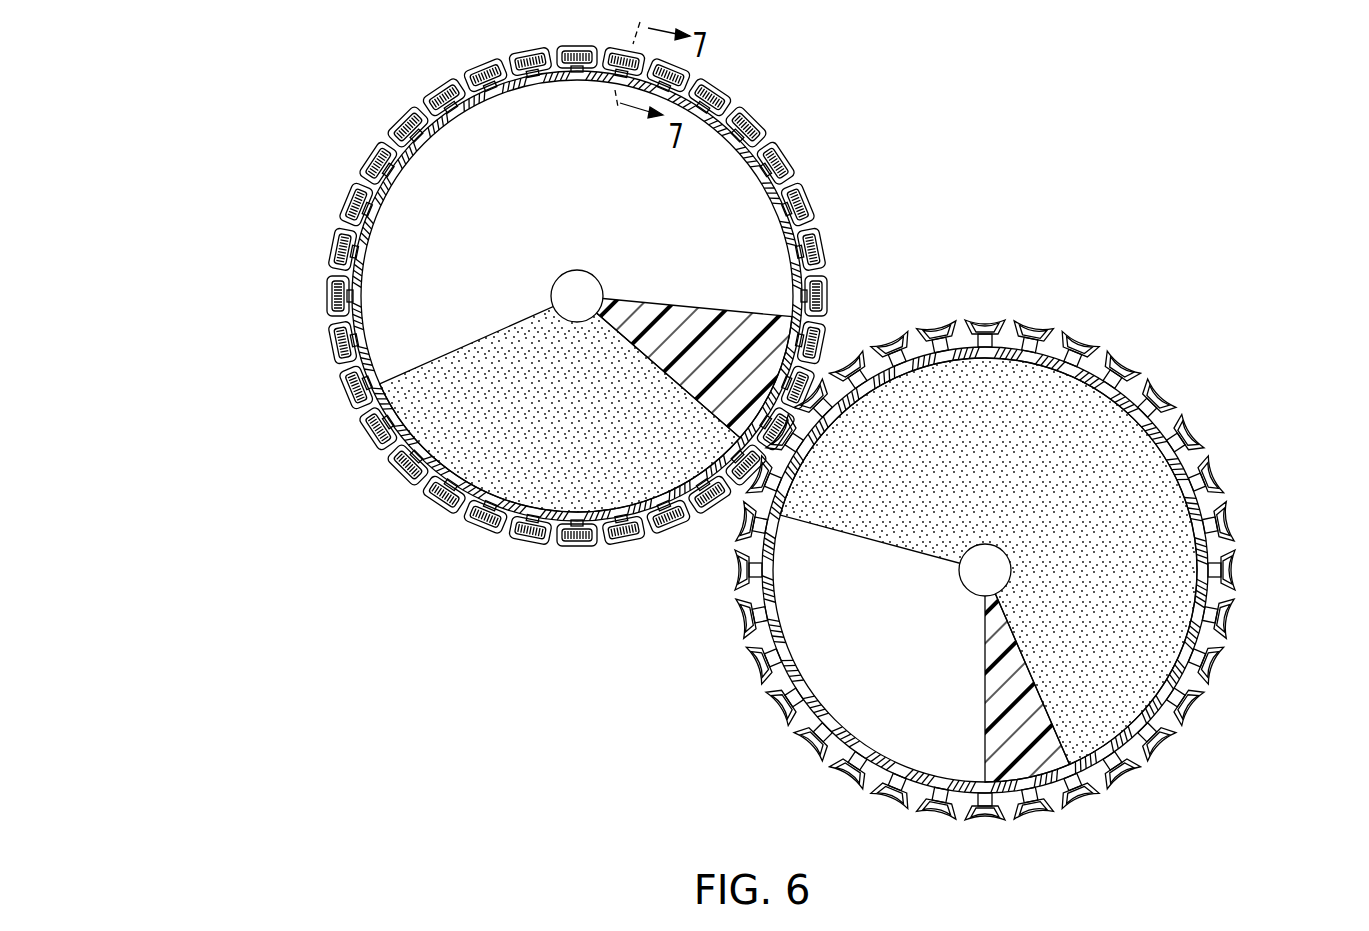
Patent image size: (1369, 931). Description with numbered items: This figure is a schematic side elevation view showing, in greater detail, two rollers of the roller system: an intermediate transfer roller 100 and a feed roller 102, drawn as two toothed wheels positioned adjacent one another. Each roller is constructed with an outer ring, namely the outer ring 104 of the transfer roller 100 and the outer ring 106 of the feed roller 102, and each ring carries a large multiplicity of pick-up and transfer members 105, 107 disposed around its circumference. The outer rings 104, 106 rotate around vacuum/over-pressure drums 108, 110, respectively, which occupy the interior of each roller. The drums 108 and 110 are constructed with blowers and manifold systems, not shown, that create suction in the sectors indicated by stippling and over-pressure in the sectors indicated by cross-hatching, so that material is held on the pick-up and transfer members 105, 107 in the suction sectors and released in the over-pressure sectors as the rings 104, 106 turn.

The intermediate transfer roller 100 is at (507, 310).
The feed roller 102 is at (1049, 552).
The outer ring 104 is at (466, 508).
The pick-up and transfer members 105 is at (753, 119).
The outer ring 106 is at (798, 716).
The pick-up and transfer members 107 is at (1127, 371).
The vacuum/over-pressure drum 108 is at (481, 153).
The vacuum/over-pressure drum 110 is at (990, 377).